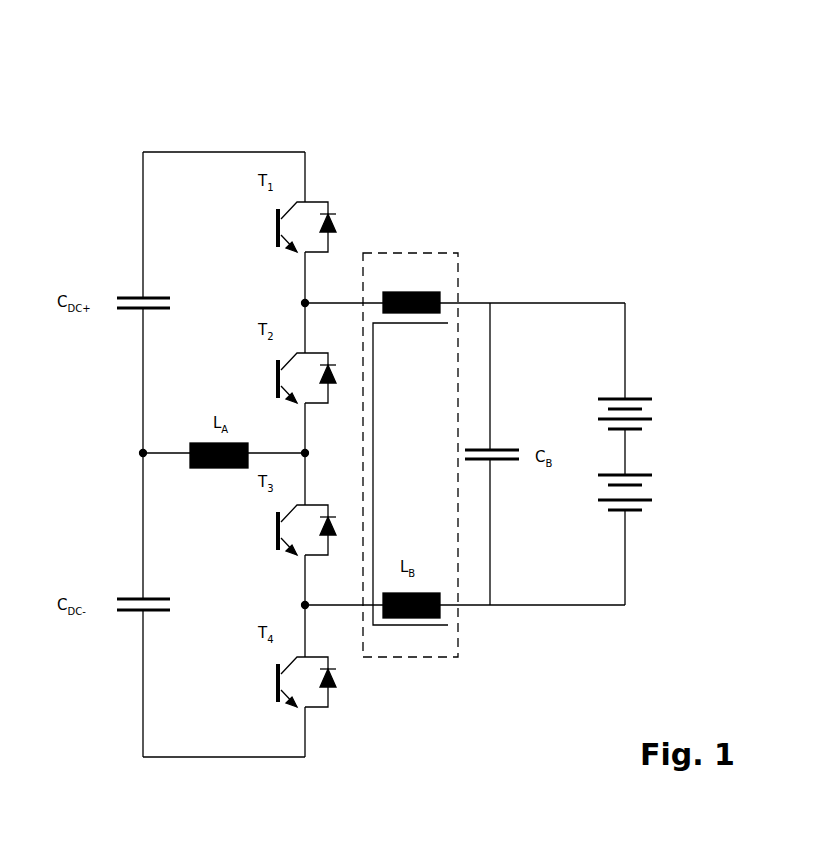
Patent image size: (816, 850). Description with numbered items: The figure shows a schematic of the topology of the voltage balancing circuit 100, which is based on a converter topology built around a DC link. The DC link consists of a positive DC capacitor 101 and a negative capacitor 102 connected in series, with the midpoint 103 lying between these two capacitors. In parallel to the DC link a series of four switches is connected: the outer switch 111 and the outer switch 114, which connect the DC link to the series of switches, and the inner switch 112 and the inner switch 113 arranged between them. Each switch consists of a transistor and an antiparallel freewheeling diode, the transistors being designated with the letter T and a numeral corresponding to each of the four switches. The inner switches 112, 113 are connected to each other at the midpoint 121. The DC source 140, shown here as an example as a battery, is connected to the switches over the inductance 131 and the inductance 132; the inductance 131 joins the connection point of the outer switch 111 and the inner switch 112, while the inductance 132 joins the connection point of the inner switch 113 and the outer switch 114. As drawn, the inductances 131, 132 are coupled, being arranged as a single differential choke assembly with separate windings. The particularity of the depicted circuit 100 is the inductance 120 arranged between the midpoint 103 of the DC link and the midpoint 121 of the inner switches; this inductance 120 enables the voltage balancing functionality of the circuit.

The voltage balancing circuit 100 is at (443, 96).
The positive DC capacitor 101 is at (122, 284).
The negative capacitor 102 is at (132, 620).
The midpoint 103 is at (143, 453).
The outer switch 111 is at (306, 212).
The inner switch 112 is at (292, 395).
The inner switch 113 is at (293, 541).
The outer switch 114 is at (313, 698).
The inductance L4 120 is at (212, 444).
The midpoint 121 is at (307, 456).
The inductance 131 is at (430, 295).
The inductance 132 is at (440, 618).
The DC source 140 is at (660, 478).